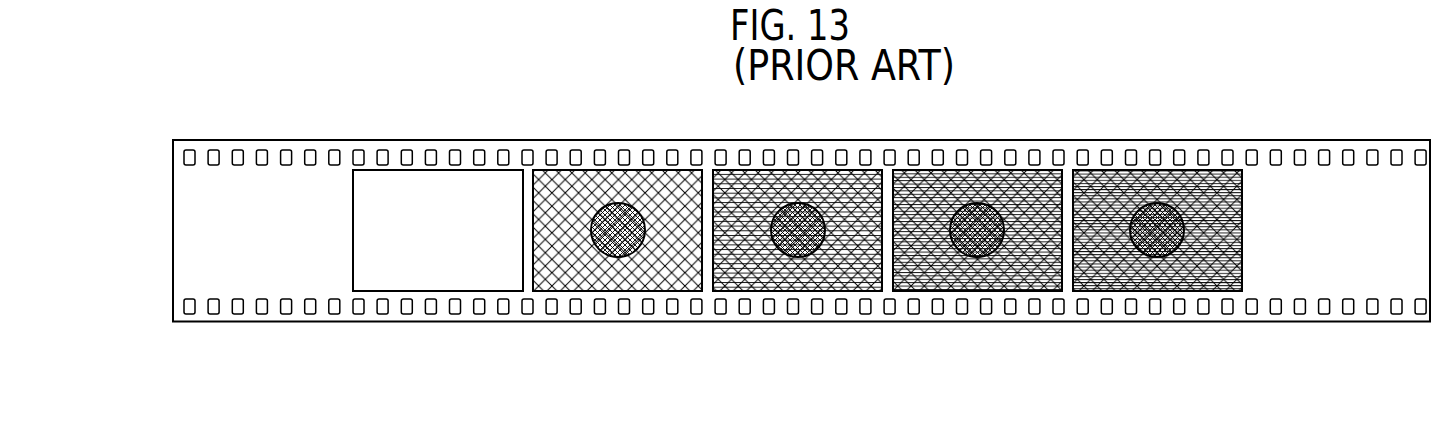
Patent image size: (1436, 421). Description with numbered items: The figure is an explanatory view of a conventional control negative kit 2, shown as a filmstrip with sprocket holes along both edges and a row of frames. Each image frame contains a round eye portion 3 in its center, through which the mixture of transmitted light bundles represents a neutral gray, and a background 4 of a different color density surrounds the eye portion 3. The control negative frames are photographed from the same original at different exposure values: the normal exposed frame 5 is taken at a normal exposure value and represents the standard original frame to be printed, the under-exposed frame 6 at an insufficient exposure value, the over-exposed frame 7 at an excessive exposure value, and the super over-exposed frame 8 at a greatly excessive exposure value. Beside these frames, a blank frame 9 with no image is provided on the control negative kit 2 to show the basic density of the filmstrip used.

The control negative kit 2 is at (750, 138).
The blank frame 9 is at (467, 292).
The under-exposed frame 6 is at (632, 292).
The background 4 is at (800, 275).
The normal exposed frame 5 is at (825, 292).
The round eye portion 3 is at (777, 252).
The over-exposed frame 7 is at (997, 292).
The super over-exposed frame 8 is at (1188, 292).